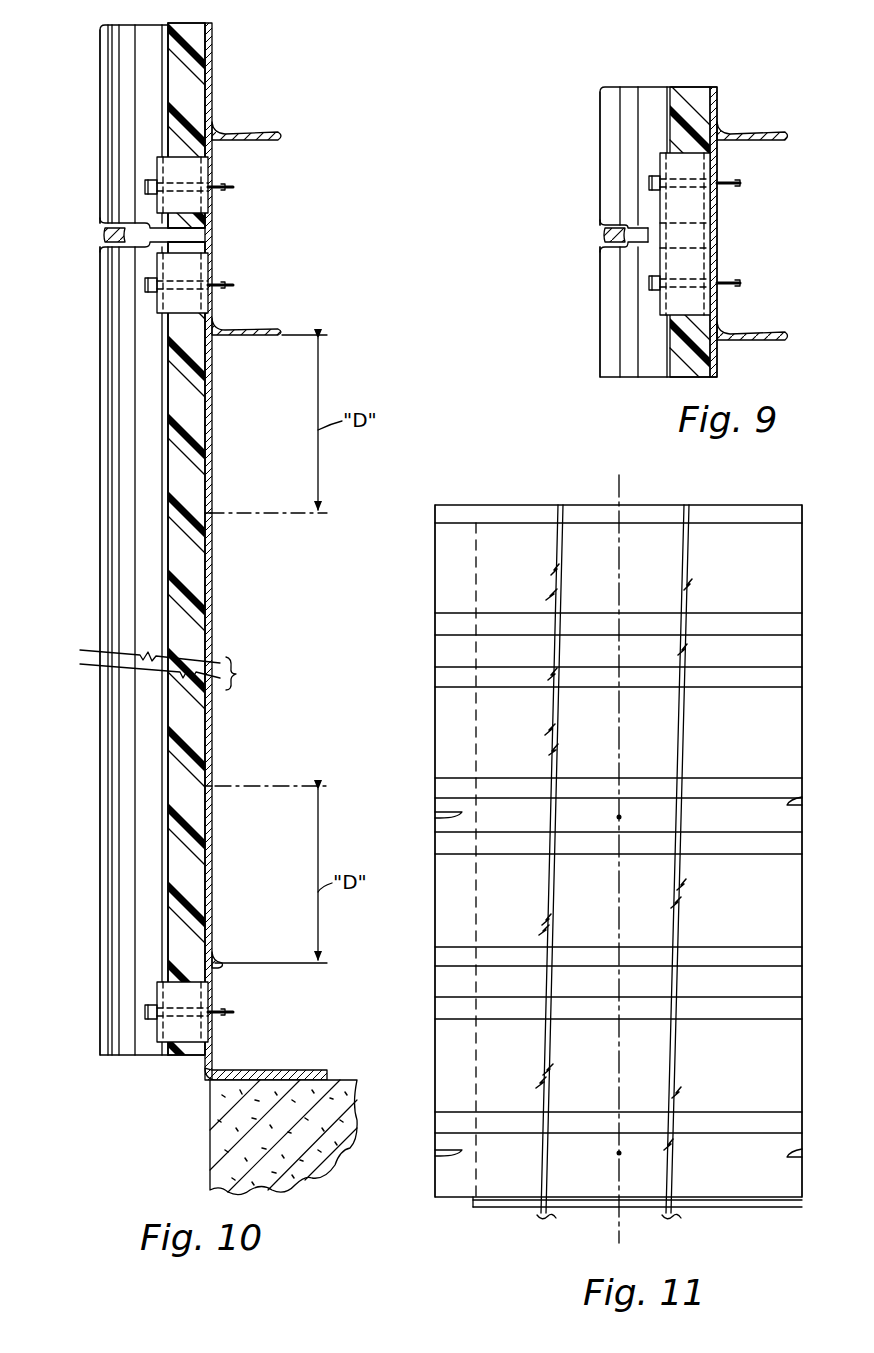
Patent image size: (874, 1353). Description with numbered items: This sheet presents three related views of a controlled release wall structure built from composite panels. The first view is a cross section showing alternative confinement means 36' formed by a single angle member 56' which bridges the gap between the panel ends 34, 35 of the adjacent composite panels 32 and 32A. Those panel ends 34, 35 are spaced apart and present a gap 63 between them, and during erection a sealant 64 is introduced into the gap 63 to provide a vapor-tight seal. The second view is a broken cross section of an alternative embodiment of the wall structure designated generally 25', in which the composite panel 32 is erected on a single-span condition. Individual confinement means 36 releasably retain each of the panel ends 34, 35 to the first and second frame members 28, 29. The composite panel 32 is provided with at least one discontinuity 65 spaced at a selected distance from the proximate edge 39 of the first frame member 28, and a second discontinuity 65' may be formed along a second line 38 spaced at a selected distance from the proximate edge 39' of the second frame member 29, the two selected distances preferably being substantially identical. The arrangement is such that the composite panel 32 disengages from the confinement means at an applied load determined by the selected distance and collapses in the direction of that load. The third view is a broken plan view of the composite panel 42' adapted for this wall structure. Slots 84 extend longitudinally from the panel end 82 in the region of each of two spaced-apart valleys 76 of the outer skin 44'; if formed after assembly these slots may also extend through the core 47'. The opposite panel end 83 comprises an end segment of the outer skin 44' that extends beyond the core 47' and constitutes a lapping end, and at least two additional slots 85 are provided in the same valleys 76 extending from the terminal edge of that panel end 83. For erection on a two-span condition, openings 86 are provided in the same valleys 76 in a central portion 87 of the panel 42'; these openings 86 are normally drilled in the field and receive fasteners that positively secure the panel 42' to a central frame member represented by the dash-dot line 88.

In FIG. 10, the controlled release wall structure 25' is at (266, 540).
In FIG. 10, the first frame member 28 is at (290, 1072).
In FIG. 10, the second frame member 29 is at (255, 137).
In FIG. 10, the composite panel 32 is at (96, 828).
In FIG. 9, the composite panel 32 is at (592, 372).
In FIG. 9, the composite panel 32A is at (598, 105).
In FIG. 10, the panel end 34 is at (100, 908).
In FIG. 9, the panel end 34 is at (604, 288).
In FIG. 10, the panel end 35 is at (100, 272).
In FIG. 9, the panel end 35 is at (600, 150).
In FIG. 10, the confinement means 36 is at (124, 599).
In FIG. 9, the confinement means 36' is at (630, 233).
In FIG. 10, the line 38 is at (266, 514).
In FIG. 10, the edge 39 is at (269, 938).
In FIG. 10, the edge 39' is at (269, 349).
In FIG. 11, the composite panel 42' is at (618, 820).
In FIG. 11, the outer skin 44' is at (719, 844).
In FIG. 11, the core 47' is at (423, 860).
In FIG. 9, the angle member 56' is at (727, 232).
In FIG. 9, the gap 63 is at (648, 237).
In FIG. 10, the sealant 64 is at (114, 235).
In FIG. 9, the sealant 64 is at (606, 236).
In FIG. 10, the discontinuity 65 is at (236, 756).
In FIG. 10, the discontinuity 65' is at (244, 551).
In FIG. 11, the valleys 76 is at (702, 830).
In FIG. 11, the panel end 82 is at (802, 738).
In FIG. 11, the panel end 83 is at (452, 710).
In FIG. 11, the slots 84 is at (796, 806).
In FIG. 11, the slots 85 is at (440, 816).
In FIG. 11, the openings 86 is at (619, 818).
In FIG. 11, the central portion 87 is at (648, 528).
In FIG. 11, the central frame member 88 is at (619, 500).